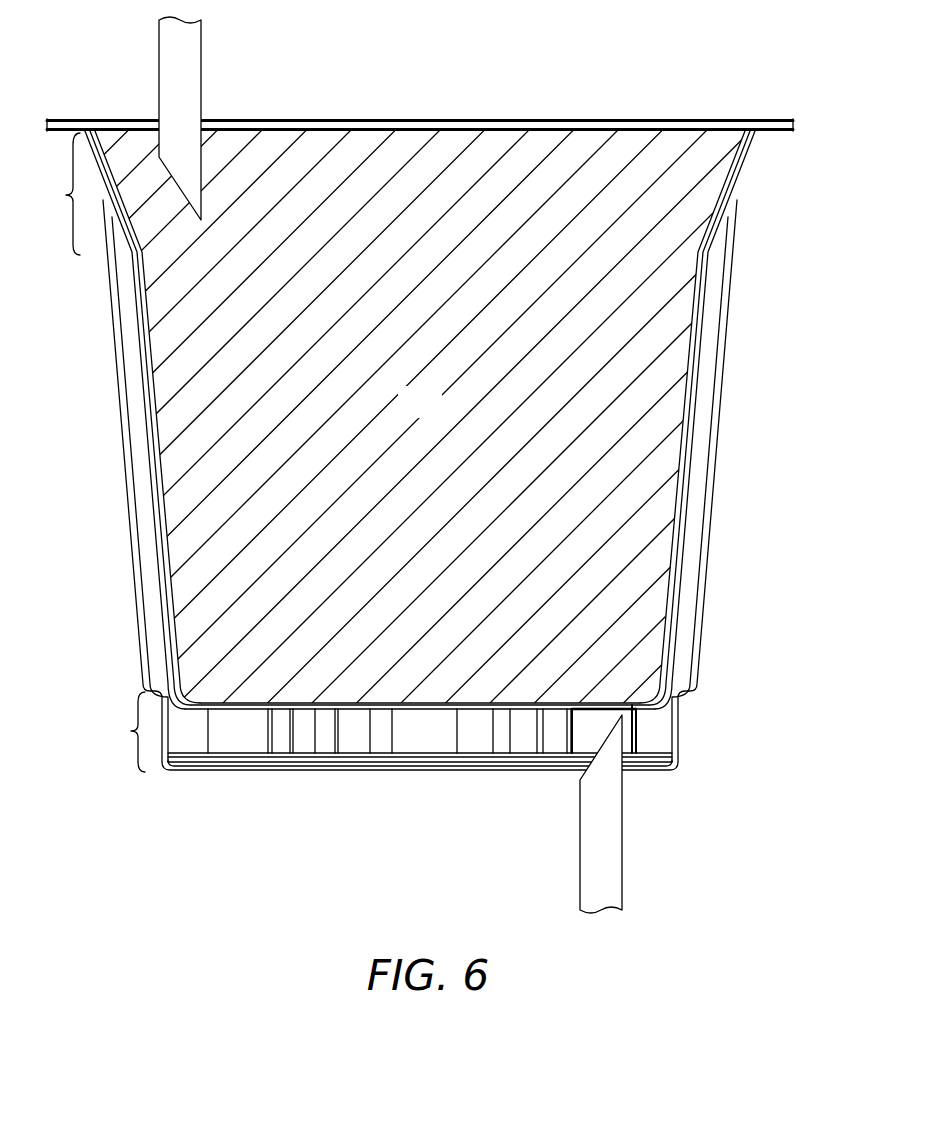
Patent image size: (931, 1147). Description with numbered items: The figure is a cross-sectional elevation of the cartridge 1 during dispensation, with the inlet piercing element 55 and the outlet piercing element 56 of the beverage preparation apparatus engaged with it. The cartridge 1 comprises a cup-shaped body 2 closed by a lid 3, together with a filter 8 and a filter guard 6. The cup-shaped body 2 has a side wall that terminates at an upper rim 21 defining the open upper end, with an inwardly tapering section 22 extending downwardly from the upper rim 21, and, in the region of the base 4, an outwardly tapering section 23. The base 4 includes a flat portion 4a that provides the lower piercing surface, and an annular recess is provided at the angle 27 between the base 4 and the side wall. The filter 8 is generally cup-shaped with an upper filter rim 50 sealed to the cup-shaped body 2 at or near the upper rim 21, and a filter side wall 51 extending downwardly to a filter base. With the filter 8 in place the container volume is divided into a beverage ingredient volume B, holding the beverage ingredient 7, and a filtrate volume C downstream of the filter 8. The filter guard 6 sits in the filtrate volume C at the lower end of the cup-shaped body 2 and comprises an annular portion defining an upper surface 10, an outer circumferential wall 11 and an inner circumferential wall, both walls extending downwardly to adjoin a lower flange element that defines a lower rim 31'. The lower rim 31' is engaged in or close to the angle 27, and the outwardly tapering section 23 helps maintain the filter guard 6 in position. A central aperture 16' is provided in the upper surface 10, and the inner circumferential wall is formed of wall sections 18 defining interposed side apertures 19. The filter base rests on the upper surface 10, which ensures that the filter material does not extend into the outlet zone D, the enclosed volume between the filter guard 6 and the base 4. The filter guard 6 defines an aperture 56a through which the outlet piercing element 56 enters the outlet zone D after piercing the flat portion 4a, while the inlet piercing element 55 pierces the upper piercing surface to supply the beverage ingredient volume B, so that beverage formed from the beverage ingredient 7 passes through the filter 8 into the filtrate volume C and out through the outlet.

The inlet piercing element 55 is at (158, 62).
The beverage ingredient 7 is at (437, 157).
The lid 3 is at (616, 108).
The upper filter rim 50 is at (746, 148).
The upper rim 21 is at (776, 133).
The inwardly tapering section 22 is at (55, 194).
The cartridge 1 is at (80, 440).
The filter 8 is at (700, 363).
The beverage ingredient volume B is at (420, 402).
The filter side wall 51 is at (173, 520).
The filtrate volume C is at (160, 632).
The cup-shaped body 2 is at (108, 662).
The outwardly tapering section 23 is at (121, 732).
The upper surface 10 is at (612, 700).
The outer circumferential wall 11 is at (645, 726).
The lower rim 31' is at (453, 739).
The angle 27 is at (664, 773).
The base 4 is at (209, 760).
The wall sections 18 is at (307, 744).
The outlet zone D is at (347, 745).
The side apertures 19 is at (380, 744).
The central aperture 16' is at (452, 731).
The flat portion 4a is at (444, 744).
The aperture 56a is at (585, 745).
The filter guard 6 is at (500, 790).
The outlet piercing element 56 is at (622, 850).